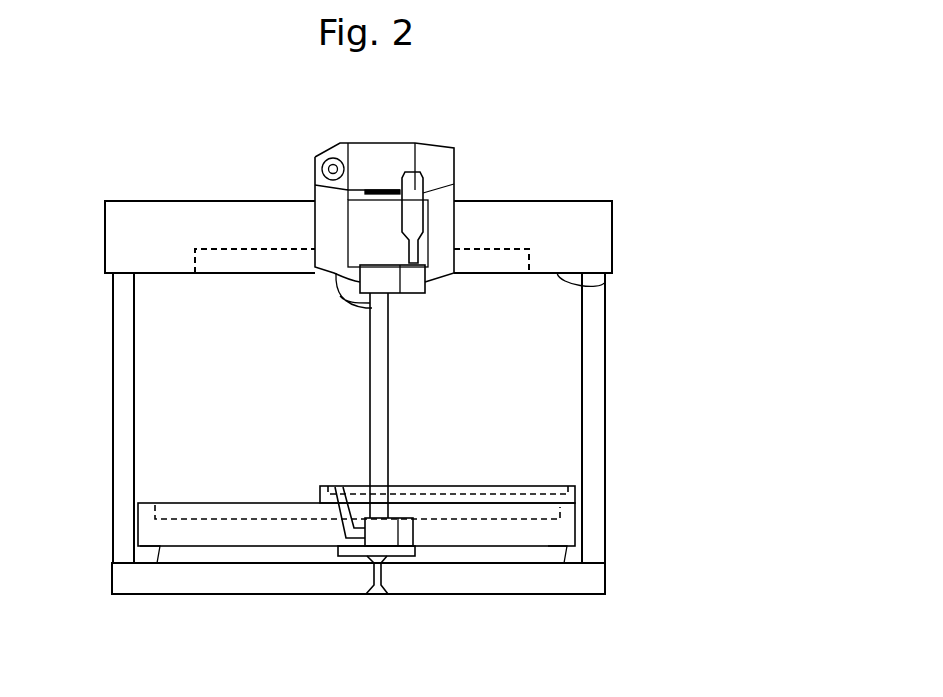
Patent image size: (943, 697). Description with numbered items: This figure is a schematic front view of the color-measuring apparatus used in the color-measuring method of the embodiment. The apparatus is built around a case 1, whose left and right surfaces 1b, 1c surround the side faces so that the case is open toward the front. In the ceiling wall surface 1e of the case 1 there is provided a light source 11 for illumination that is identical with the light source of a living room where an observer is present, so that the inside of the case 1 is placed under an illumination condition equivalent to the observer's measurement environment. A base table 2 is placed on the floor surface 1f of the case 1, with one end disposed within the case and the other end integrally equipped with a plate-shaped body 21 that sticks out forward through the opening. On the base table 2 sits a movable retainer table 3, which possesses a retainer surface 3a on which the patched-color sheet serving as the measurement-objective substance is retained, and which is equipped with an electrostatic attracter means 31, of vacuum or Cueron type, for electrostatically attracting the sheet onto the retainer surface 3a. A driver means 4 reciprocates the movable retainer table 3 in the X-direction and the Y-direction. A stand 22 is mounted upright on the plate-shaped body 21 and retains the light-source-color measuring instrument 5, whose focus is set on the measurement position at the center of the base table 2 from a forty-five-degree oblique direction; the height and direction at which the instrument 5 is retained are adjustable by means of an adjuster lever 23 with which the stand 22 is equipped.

The case 1 is at (615, 217).
The left surface 1b is at (123, 390).
The right surface 1c is at (606, 390).
The ceiling wall surface 1e is at (604, 283).
The floor surface 1f is at (590, 582).
The light source 11 is at (502, 248).
The light-source-color measuring instrument 5 is at (375, 152).
The adjuster lever 23 is at (410, 192).
The stand 22 is at (377, 339).
The base table 2 is at (567, 528).
The movable retainer table 3 is at (565, 486).
The retainer surface 3a is at (522, 485).
The electrostatic attracter means 31 is at (560, 496).
The driver means 4 is at (520, 520).
The plate-shaped body 21 is at (417, 550).